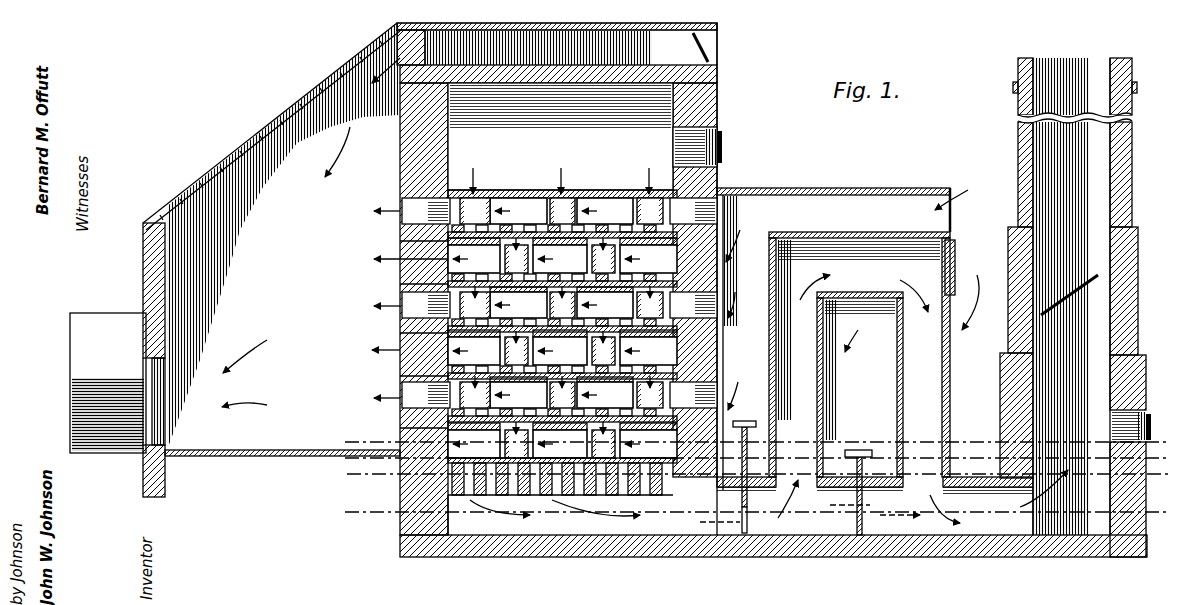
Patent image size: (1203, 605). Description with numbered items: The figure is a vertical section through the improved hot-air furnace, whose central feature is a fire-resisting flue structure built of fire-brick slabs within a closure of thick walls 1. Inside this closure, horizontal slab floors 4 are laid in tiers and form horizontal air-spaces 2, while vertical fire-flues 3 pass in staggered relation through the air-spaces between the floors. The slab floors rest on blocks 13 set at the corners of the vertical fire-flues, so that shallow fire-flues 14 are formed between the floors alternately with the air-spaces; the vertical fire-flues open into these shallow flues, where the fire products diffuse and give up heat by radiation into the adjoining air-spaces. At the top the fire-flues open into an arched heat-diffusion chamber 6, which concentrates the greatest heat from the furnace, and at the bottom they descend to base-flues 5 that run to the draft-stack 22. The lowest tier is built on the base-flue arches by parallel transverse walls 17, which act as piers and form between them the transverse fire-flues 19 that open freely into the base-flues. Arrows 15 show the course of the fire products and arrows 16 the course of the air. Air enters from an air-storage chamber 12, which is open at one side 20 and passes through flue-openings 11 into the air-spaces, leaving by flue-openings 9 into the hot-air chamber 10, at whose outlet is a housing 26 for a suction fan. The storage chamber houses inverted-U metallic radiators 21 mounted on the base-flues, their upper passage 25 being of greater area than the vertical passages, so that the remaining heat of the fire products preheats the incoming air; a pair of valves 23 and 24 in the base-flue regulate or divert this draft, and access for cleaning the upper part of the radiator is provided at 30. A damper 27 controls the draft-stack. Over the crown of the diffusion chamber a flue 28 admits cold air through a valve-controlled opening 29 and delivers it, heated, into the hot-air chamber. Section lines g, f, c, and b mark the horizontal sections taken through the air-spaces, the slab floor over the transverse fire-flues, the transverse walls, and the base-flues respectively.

The closure walls 1 is at (720, 181).
The air-spaces 2 is at (562, 328).
The vertical fire-flues 3 is at (561, 328).
The slab floors 4 is at (507, 266).
The base-flues 5 is at (773, 522).
The heat-diffusion chamber 6 is at (560, 136).
The flue-openings 9 is at (426, 303).
The hot-air chamber 10 is at (271, 260).
The flue-openings 11 is at (693, 303).
The air-storage chamber 12 is at (745, 330).
The blocks 13 is at (672, 328).
The shallow fire-flues 14 is at (402, 428).
The arrows showing course of fire products 15 is at (774, 340).
The arrows showing course of air 16 is at (669, 290).
The transverse walls 17 is at (473, 490).
The fire-flues 19 is at (518, 490).
The open side 20 is at (860, 210).
The metallic radiators 21 is at (875, 363).
The draft-stack 22 is at (1075, 307).
The valve 23 is at (744, 468).
The valve 24 is at (860, 450).
The upper passage 25 is at (857, 270).
The housing 26 is at (108, 383).
The damper 27 is at (1069, 289).
The flue 28 is at (557, 44).
The valve-controlled opening 29 is at (710, 45).
The access point for cleaning 30 is at (956, 270).
The section line g g is at (757, 438).
The section line f f is at (755, 459).
The section line c c is at (757, 475).
The section line b b is at (755, 511).